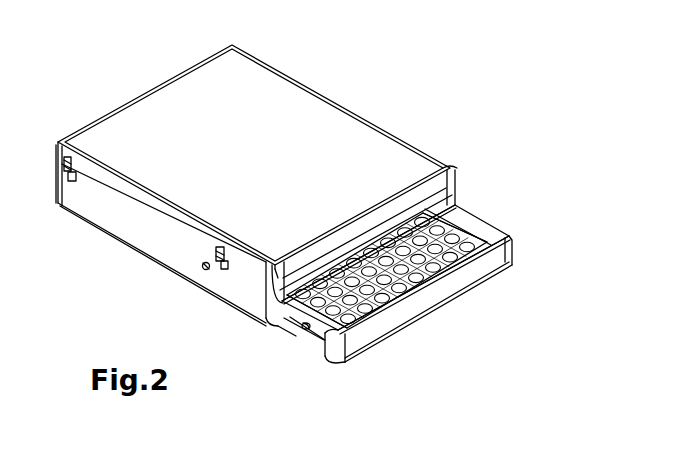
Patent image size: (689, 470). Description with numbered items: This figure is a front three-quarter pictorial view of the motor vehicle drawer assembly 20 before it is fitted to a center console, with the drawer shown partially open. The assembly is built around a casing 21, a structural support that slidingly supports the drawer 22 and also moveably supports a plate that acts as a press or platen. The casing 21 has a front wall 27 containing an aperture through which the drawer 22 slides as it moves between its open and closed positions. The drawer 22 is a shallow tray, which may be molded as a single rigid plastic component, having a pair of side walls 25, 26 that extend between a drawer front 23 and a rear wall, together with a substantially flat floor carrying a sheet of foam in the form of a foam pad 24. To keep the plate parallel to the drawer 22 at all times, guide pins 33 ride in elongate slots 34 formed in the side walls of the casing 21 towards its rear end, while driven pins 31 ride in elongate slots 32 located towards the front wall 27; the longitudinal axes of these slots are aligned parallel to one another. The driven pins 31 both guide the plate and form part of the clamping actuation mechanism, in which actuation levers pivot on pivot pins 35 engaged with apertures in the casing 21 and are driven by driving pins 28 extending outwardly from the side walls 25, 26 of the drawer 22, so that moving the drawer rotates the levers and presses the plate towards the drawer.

The motor vehicle drawer assembly 20 is at (256, 167).
The casing 21 is at (173, 127).
The drawer 22 is at (454, 264).
The drawer front 23 is at (452, 290).
The foam pad 24 is at (451, 242).
The side wall 25 is at (288, 313).
The side wall 26 is at (459, 215).
The front wall 27 is at (405, 218).
The driving pin 28 is at (304, 329).
The driven pin 31 is at (216, 254).
The elongate slot 32 is at (229, 270).
The guide pin 33 is at (64, 160).
The elongate slot 34 is at (76, 181).
The pivot pin 35 is at (202, 268).